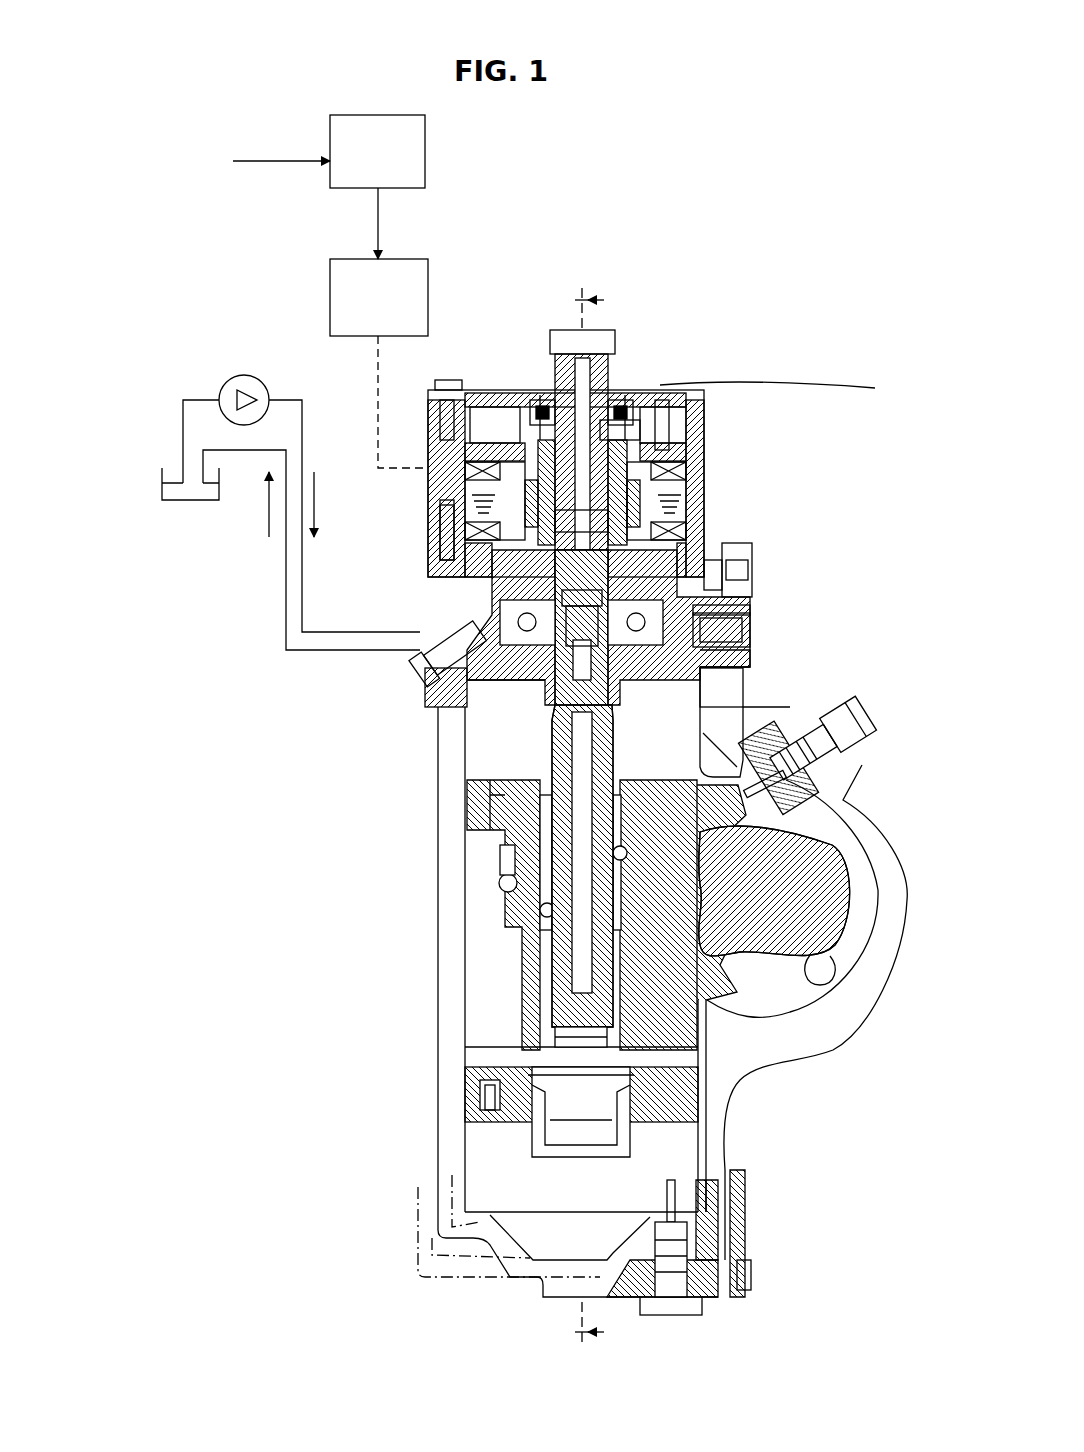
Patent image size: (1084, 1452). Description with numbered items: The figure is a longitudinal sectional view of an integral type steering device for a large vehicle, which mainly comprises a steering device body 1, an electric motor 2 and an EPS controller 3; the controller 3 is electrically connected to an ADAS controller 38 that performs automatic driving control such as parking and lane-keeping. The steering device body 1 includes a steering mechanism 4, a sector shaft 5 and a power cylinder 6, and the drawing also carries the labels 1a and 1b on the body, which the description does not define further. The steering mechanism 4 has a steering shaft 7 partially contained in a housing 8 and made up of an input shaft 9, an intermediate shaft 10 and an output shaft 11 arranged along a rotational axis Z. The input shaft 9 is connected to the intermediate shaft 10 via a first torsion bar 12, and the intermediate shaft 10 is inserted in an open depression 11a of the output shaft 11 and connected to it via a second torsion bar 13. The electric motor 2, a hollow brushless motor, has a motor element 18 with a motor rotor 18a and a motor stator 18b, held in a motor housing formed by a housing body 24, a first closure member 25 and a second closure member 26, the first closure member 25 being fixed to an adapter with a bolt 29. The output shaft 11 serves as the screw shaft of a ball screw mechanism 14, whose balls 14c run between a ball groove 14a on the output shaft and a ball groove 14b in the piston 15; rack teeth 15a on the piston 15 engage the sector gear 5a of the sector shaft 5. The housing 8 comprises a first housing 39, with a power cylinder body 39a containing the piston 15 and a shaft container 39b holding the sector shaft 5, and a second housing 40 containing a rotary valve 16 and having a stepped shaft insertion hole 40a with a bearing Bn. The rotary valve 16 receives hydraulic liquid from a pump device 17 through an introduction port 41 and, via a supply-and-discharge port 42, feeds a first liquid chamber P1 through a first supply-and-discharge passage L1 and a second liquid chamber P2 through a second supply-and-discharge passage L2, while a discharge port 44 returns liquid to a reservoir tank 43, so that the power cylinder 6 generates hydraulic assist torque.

The steering device body 1 is at (900, 955).
The motor housing portion 1a is at (720, 502).
The cylinder housing portion 1b is at (430, 933).
The electric motor 2 is at (716, 492).
The EPS controller 3 is at (330, 284).
The steering mechanism 4 is at (625, 376).
The sector shaft 5 is at (803, 952).
The sector gear 5a is at (694, 950).
The power cylinder 6 is at (445, 1012).
The steering shaft 7 is at (898, 373).
The housing 8 is at (815, 693).
The input shaft 9 is at (780, 387).
The intermediate shaft 10 is at (730, 560).
The output shaft 11 is at (836, 728).
The open depression 11a is at (480, 598).
The first torsion bar 12 is at (598, 384).
The second torsion bar 13 is at (580, 942).
The ball screw mechanism 14 is at (477, 915).
The ball groove 14a is at (492, 820).
The ball groove 14b is at (500, 855).
The balls 14c is at (530, 905).
The piston 15 is at (645, 1107).
The rack teeth 15a is at (700, 1007).
The rotary valve 16 is at (440, 672).
The pump device 17 is at (244, 375).
The motor element 18 is at (508, 513).
The motor rotor 18a is at (475, 500).
The motor stator 18b is at (468, 518).
The housing body 24 is at (700, 440).
The first closure member 25 is at (438, 565).
The second closure member 26 is at (497, 388).
The bolt 29 is at (733, 548).
The ADAS controller 38 is at (326, 176).
The first housing 39 is at (725, 700).
The power cylinder body 39a is at (470, 1047).
The shaft container 39b is at (808, 985).
The second housing 40 is at (718, 656).
The shaft insertion hole 40a is at (742, 582).
The introduction port 41 is at (660, 700).
The supply-and-discharge port 42 is at (728, 632).
The reservoir tank 43 is at (190, 500).
The discharge port 44 is at (750, 606).
The bearing Bn is at (530, 630).
The first supply-and-discharge passage L1 is at (520, 720).
The second supply-and-discharge passage L2 is at (450, 680).
The first liquid chamber P1 is at (480, 758).
The second liquid chamber P2 is at (483, 1150).
The rotational axis Z is at (598, 817).